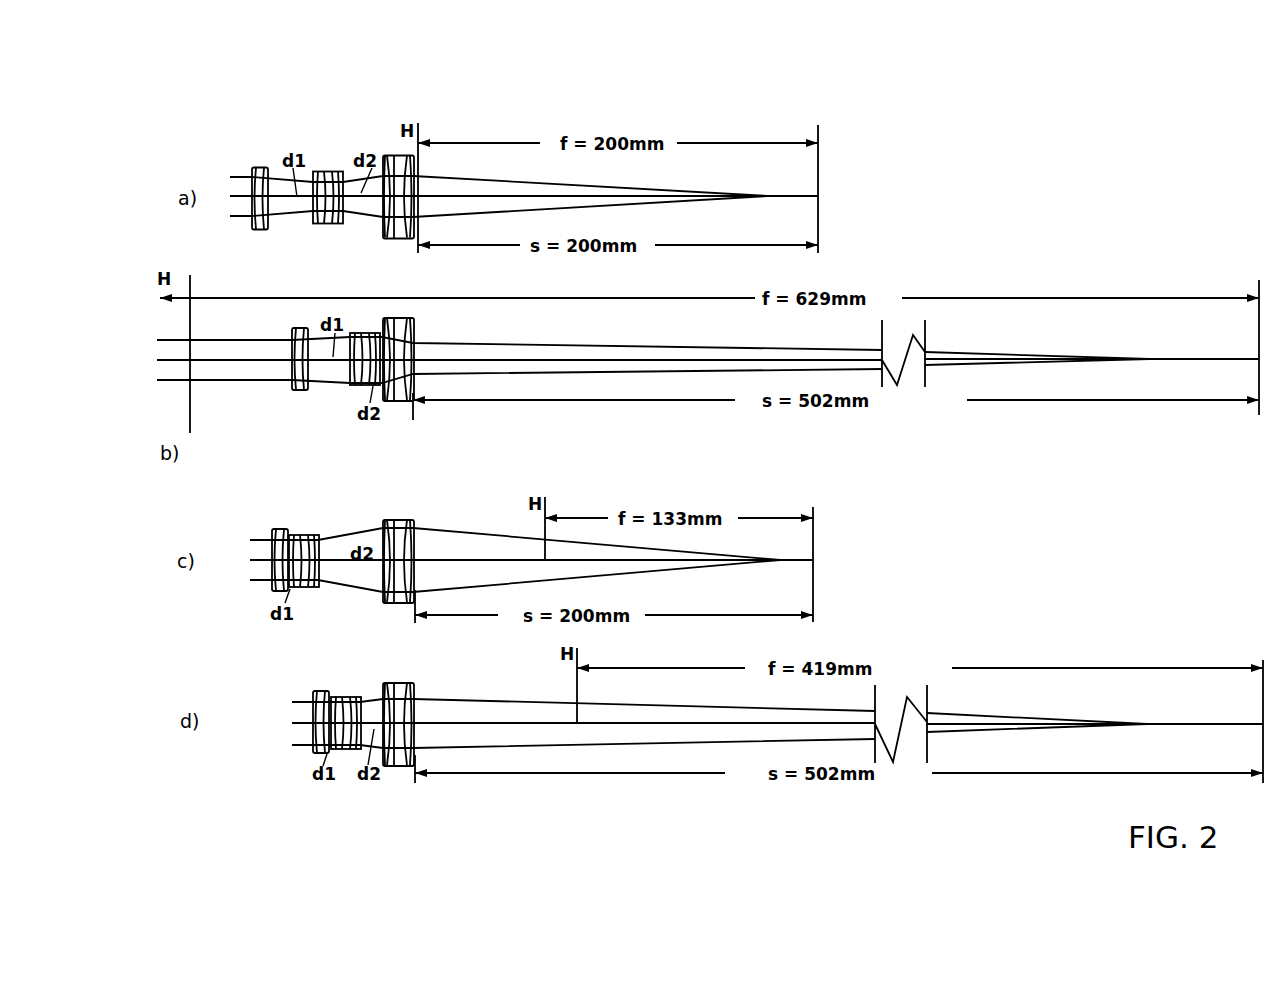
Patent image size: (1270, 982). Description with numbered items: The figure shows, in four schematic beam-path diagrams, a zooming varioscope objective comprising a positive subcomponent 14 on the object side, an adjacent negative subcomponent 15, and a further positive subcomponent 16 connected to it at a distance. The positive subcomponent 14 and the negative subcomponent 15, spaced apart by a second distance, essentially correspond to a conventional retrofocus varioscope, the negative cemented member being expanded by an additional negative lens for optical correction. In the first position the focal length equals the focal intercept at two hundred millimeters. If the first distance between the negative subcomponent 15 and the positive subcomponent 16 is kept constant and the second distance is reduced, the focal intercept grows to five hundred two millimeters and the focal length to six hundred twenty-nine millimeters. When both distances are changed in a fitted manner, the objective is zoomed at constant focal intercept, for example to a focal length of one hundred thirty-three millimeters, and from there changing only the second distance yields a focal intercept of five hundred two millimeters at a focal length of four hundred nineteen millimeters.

The positive subcomponent 14 is at (393, 153).
The negative subcomponent 15 is at (323, 173).
The positive subcomponent 16 is at (258, 168).